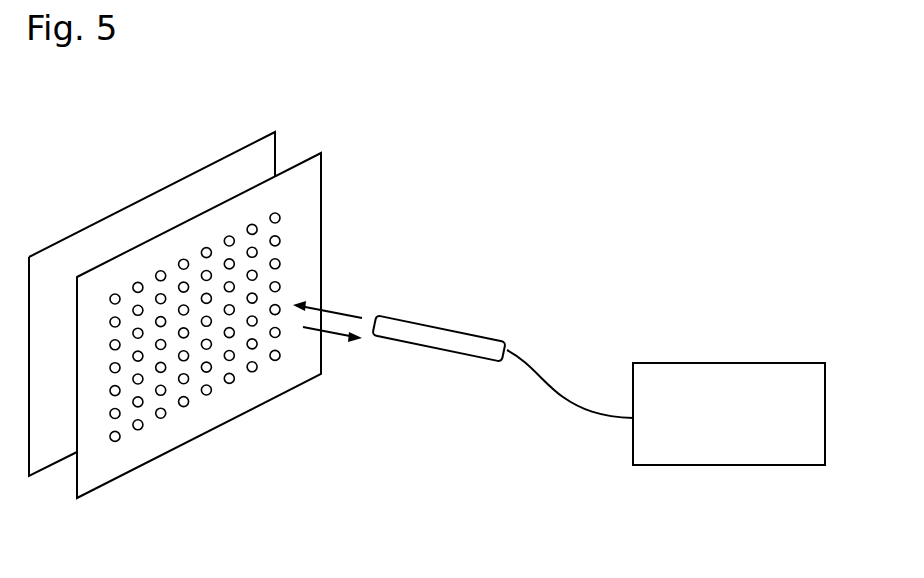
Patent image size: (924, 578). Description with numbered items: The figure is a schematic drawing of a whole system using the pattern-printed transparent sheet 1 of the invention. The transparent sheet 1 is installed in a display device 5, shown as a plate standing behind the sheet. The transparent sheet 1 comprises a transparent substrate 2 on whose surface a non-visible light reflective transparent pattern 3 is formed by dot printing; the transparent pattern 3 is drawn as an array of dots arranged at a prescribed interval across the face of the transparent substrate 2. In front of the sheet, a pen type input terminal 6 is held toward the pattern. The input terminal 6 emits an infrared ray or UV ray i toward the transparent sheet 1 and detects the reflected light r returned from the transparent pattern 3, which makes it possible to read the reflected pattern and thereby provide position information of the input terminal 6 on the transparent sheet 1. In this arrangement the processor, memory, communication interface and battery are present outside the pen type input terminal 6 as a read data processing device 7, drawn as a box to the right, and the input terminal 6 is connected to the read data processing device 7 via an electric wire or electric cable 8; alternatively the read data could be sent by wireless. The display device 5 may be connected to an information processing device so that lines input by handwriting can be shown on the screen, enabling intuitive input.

The pattern-printed transparent sheet 1 is at (213, 443).
The transparent substrate 2 is at (98, 466).
The transparent pattern 3 is at (280, 218).
The display device 5 is at (87, 247).
The input terminal 6 is at (438, 323).
The read data processing device 7 is at (715, 363).
The electric wire or electric cable 8 is at (563, 397).
The infrared ray or UV ray i is at (337, 314).
The reflected light r is at (333, 335).